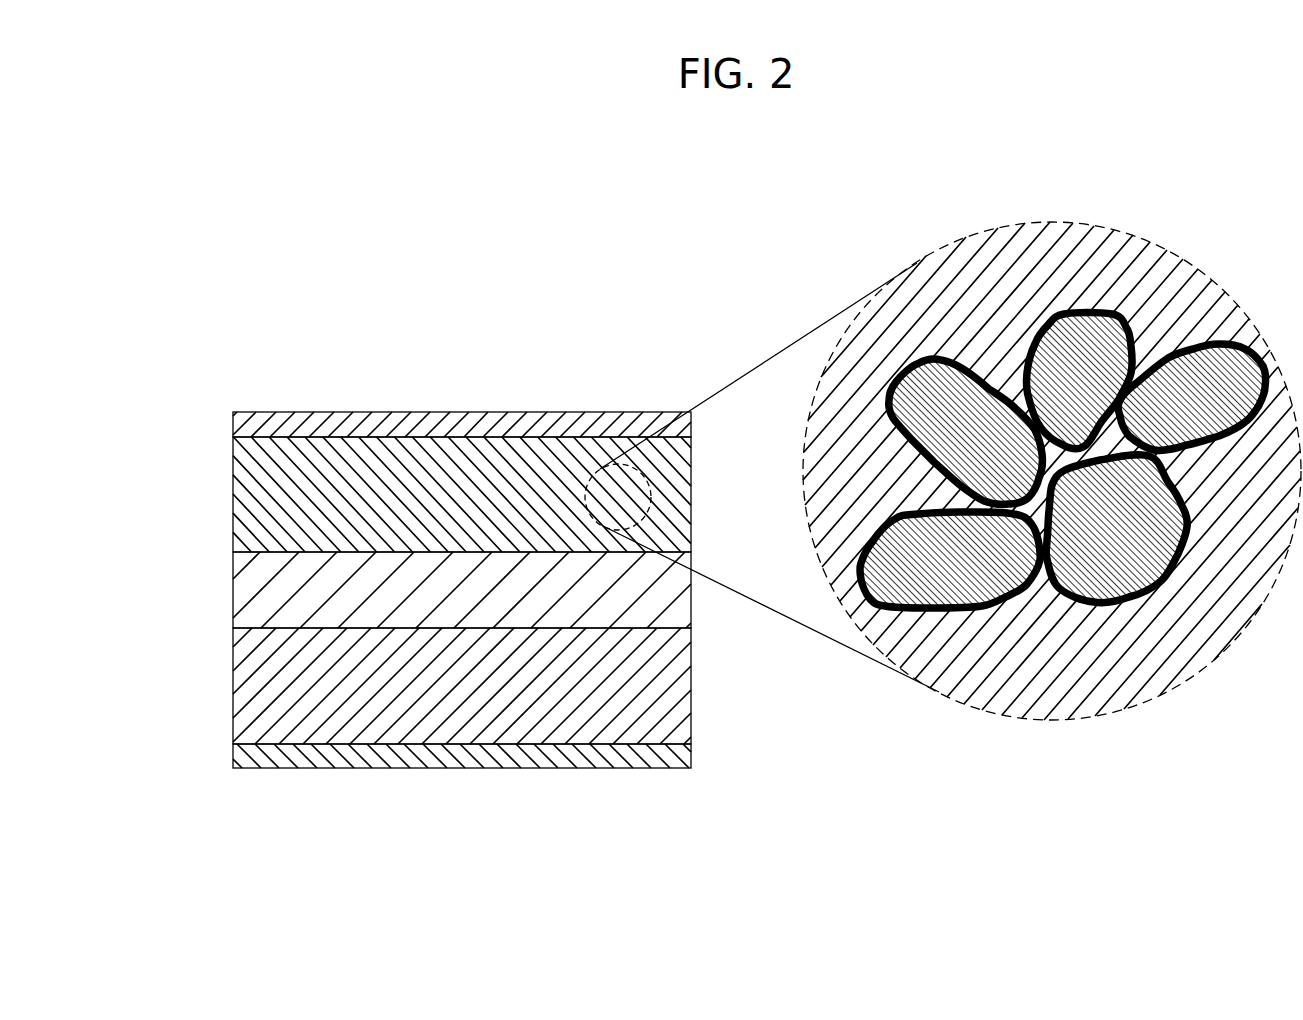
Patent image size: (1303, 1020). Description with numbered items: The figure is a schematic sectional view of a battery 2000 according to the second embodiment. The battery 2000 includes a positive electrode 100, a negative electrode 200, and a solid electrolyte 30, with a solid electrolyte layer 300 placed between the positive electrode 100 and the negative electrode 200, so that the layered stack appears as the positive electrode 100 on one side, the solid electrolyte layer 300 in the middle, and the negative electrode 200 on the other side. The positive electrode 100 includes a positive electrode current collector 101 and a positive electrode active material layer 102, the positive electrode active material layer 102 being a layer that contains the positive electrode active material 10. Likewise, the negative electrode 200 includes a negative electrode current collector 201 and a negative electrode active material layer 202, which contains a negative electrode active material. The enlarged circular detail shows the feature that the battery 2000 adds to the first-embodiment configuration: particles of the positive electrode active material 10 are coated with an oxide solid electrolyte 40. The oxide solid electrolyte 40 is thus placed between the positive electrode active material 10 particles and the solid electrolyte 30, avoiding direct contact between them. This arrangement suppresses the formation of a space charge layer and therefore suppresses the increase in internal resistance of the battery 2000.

The battery 2000 is at (400, 260).
The positive electrode 100 is at (220, 412).
The positive electrode current collector 101 is at (318, 412).
The positive electrode active material layer 102 is at (408, 448).
The solid electrolyte layer 300 is at (220, 552).
The negative electrode 200 is at (220, 628).
The negative electrode current collector 201 is at (612, 758).
The negative electrode active material layer 202 is at (530, 742).
The solid electrolyte 30 is at (406, 614).
The positive electrode active material 10 is at (1082, 337).
The oxide solid electrolyte 40 is at (1135, 310).